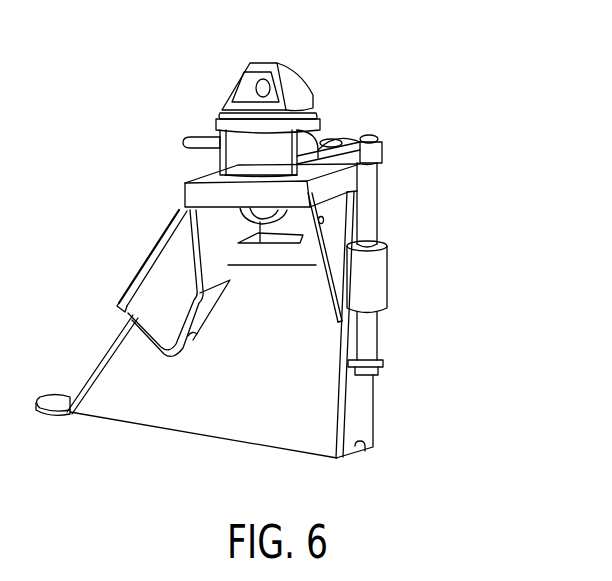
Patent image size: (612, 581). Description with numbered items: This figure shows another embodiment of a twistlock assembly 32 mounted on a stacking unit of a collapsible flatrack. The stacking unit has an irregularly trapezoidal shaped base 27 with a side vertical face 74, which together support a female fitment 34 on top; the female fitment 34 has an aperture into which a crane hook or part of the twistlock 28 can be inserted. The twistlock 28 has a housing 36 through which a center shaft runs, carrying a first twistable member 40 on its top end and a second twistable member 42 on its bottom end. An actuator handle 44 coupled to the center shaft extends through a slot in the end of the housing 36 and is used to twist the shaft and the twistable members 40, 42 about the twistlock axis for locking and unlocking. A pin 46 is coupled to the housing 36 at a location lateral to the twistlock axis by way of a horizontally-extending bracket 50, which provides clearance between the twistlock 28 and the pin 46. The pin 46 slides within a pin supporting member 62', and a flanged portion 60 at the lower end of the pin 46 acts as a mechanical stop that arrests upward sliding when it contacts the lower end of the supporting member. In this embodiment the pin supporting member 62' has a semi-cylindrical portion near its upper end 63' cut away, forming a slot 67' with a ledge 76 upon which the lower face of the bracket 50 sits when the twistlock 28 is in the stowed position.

The base 27 is at (198, 418).
The twistlock 28 is at (341, 92).
The twistlock assembly 32 is at (442, 143).
The female fitment 34 is at (193, 192).
The housing 36 is at (130, 428).
The first twistable member 40 is at (268, 60).
The second twistable member 42 is at (245, 216).
The actuator handle 44 is at (198, 142).
The pin 46 is at (378, 202).
The bracket 50 is at (356, 134).
The flanged portion 60 is at (384, 360).
The pin supporting member 62' is at (417, 277).
The upper end 63' is at (303, 264).
The slot 67' is at (282, 307).
The side vertical face 74 is at (358, 407).
The ledge 76 is at (379, 243).